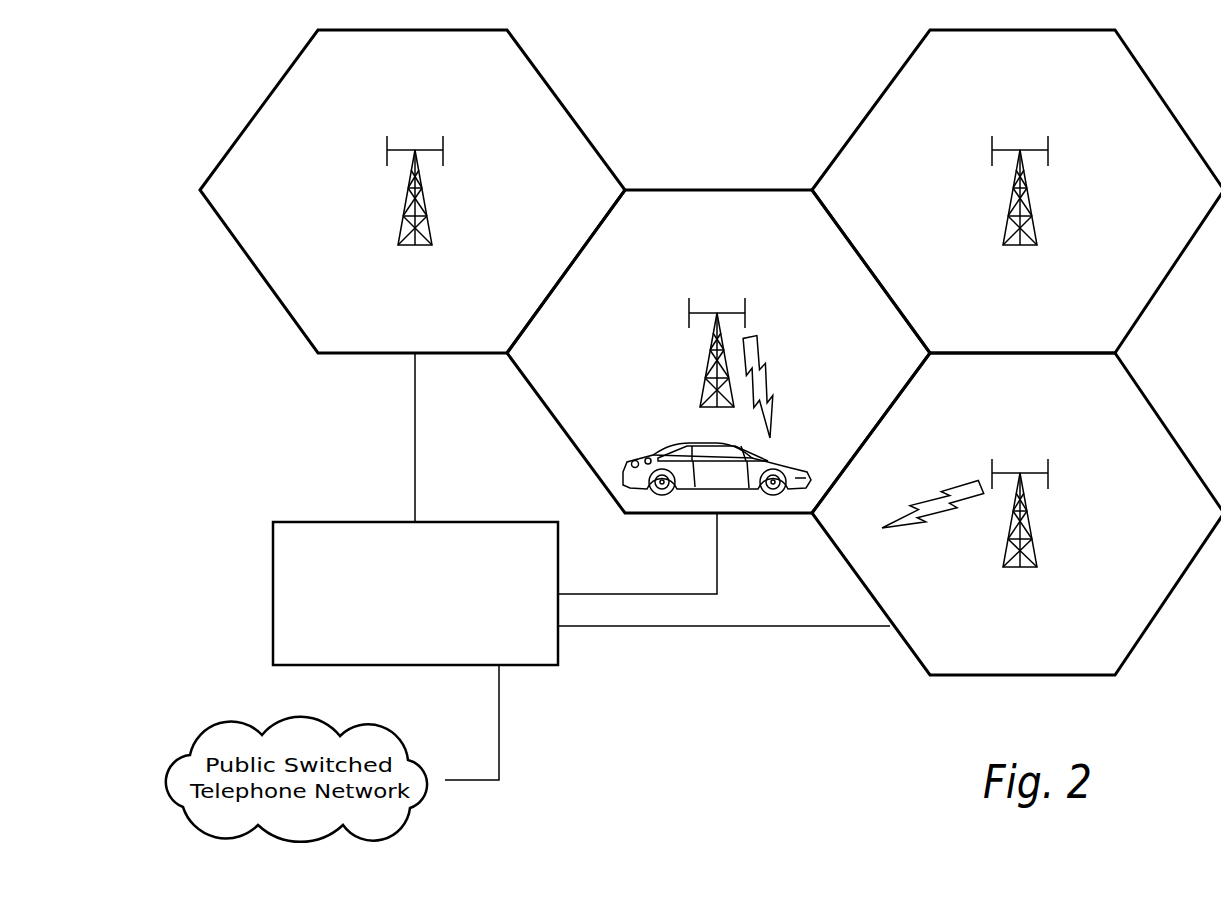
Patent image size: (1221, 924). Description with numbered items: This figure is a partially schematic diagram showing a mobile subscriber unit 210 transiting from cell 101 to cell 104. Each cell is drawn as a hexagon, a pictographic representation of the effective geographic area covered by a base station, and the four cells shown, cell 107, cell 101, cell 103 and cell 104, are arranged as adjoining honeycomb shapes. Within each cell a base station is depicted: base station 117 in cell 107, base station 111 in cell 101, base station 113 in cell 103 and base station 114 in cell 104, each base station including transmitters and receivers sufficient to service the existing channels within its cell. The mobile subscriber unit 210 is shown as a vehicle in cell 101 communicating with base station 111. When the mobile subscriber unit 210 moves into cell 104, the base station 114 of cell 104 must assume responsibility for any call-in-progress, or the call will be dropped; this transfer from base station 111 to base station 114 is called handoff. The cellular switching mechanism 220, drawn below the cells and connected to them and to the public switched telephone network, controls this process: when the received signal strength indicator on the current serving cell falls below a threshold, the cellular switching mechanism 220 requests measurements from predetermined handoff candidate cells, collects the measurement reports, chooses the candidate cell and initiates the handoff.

The cell 101 is at (775, 238).
The cell 103 is at (1078, 77).
The cell 104 is at (1080, 398).
The cell 107 is at (473, 77).
The base station 111 is at (706, 368).
The base station 113 is at (1029, 207).
The base station 114 is at (1029, 532).
The base station 117 is at (424, 208).
The mobile subscriber unit 210 is at (655, 452).
The cellular switching mechanism 220 is at (558, 558).